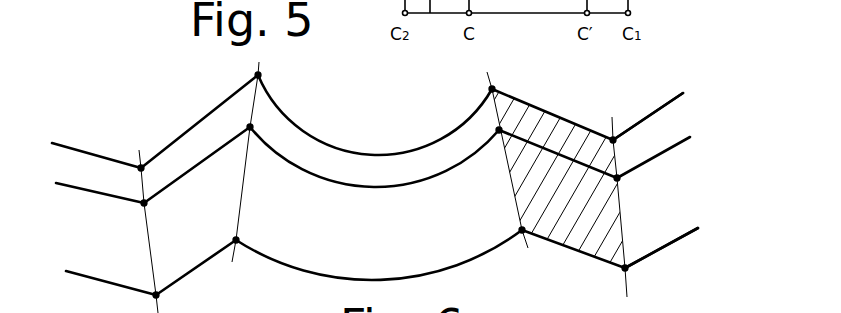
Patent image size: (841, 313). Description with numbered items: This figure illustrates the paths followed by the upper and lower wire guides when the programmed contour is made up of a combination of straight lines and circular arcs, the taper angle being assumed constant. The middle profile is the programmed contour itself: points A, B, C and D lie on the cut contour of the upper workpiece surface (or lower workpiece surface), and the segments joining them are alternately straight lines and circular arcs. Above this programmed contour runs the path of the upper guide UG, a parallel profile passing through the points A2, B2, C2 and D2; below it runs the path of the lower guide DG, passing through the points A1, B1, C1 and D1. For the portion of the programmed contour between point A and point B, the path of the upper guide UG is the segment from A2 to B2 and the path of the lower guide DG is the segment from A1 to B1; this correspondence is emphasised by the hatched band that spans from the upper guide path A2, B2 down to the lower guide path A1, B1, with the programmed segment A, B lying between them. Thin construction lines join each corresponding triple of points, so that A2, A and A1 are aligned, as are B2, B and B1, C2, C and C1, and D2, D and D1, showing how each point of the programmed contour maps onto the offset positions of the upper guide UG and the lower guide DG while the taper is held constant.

The point A on the cut contour A is at (623, 165).
The point A1 on the lower guide path A1 is at (637, 277).
The point A2 on the upper guide path A2 is at (624, 123).
The point B on the cut contour B is at (490, 127).
The point B1 on the lower guide path B1 is at (535, 247).
The point B2 on the upper guide path B2 is at (501, 79).
The point C on the cut contour C is at (257, 121).
The point C1 on the lower guide path C1 is at (244, 255).
The point C2 on the upper guide path C2 is at (269, 69).
The point D on the cut contour D is at (149, 190).
The point D1 on the lower guide path D1 is at (169, 302).
The point D2 on the upper guide path D2 is at (148, 151).
The upper guide UG is at (665, 112).
The lower guide DG is at (677, 240).